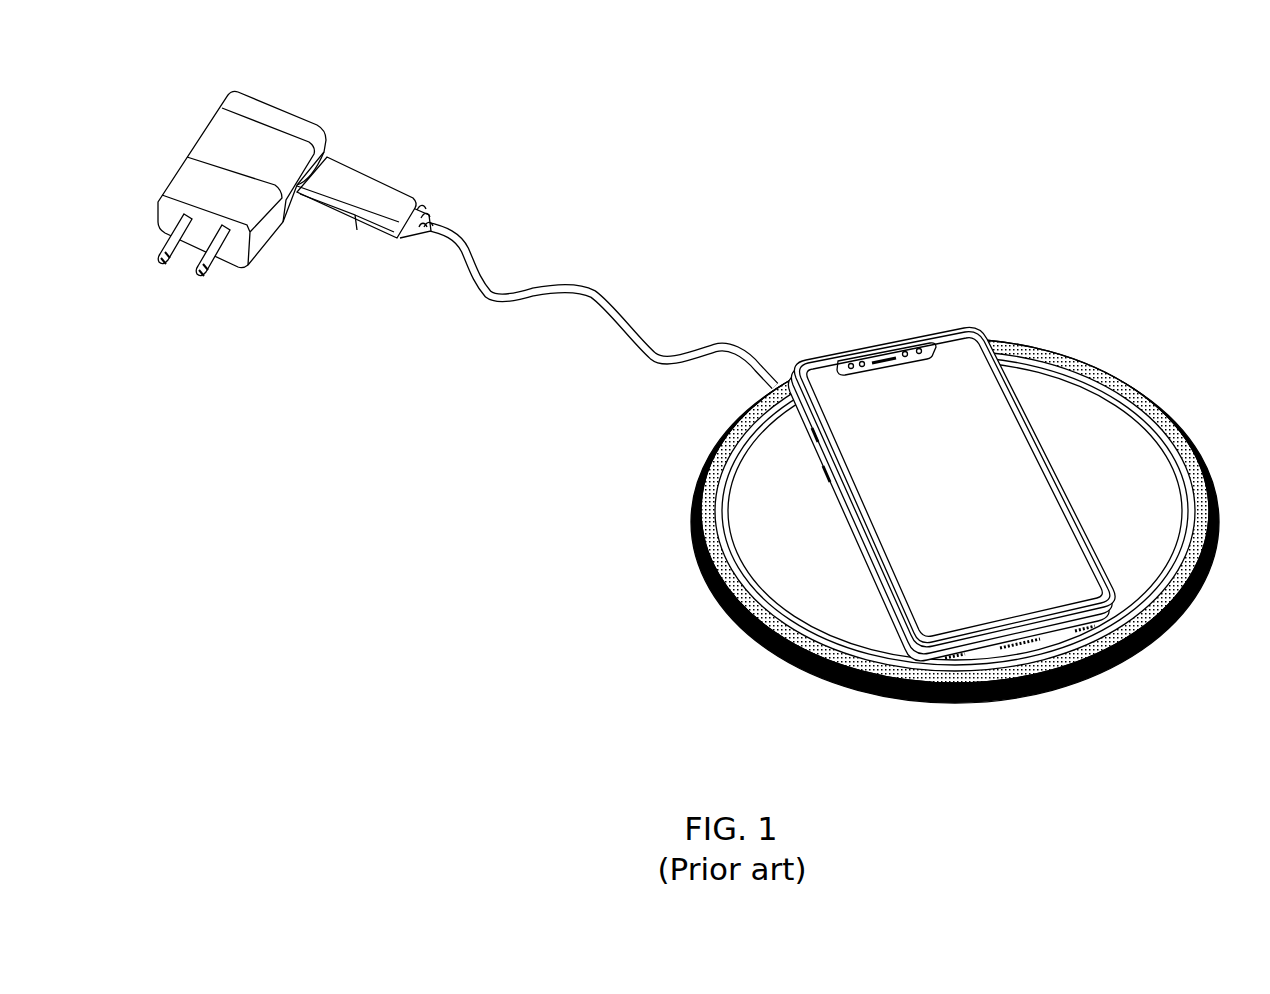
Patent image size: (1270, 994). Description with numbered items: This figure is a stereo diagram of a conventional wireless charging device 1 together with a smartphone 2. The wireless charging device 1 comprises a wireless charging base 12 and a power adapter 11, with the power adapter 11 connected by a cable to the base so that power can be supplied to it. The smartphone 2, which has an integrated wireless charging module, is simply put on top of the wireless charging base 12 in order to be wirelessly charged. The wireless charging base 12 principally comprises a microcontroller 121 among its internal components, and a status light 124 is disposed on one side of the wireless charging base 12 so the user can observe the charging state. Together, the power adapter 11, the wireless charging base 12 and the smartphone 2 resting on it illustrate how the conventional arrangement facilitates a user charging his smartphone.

The wireless charging device 1 is at (1128, 293).
The power adapter 11 is at (343, 140).
The wireless charging base 12 is at (886, 521).
The microcontroller 121 is at (750, 472).
The status light 124 is at (716, 553).
The smartphone 2 is at (1060, 444).